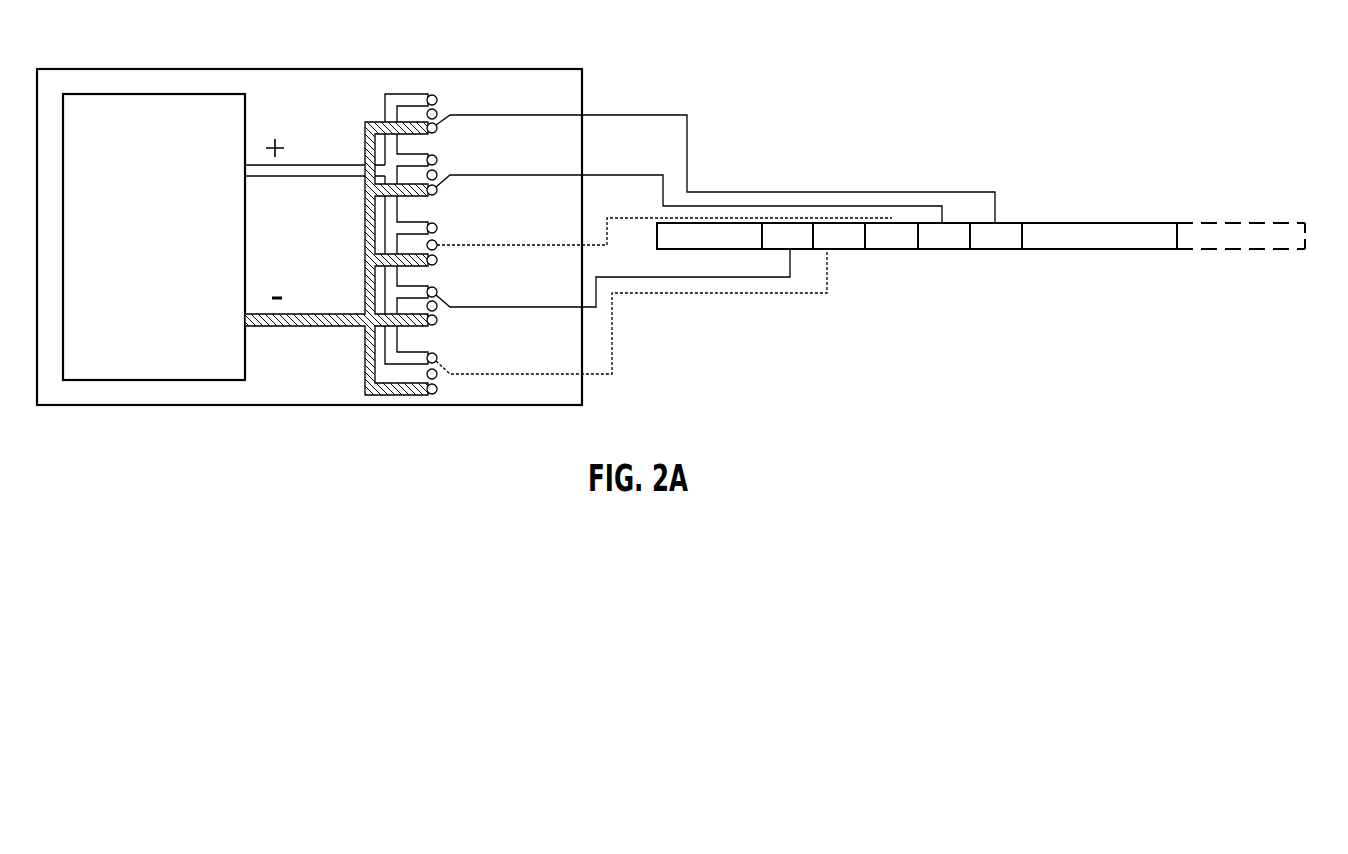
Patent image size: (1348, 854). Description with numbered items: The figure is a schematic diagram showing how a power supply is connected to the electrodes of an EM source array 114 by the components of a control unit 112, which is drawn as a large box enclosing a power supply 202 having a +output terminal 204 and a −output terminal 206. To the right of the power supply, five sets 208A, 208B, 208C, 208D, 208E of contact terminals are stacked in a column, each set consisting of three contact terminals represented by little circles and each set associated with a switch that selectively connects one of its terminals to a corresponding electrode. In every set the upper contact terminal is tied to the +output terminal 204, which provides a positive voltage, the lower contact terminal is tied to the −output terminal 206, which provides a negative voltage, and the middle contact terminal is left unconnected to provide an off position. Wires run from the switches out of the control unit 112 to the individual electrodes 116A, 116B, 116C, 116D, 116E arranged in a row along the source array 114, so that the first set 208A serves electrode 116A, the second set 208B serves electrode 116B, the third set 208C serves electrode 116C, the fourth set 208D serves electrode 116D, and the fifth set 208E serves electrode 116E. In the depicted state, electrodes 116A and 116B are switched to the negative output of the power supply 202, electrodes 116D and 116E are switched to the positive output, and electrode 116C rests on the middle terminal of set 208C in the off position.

The control unit 112 is at (462, 68).
The source array 114 is at (1278, 204).
The electrode 116A is at (997, 250).
The electrode 116B is at (945, 250).
The electrode 116C is at (887, 250).
The electrode 116D is at (847, 250).
The electrode 116E is at (798, 251).
The power supply 202 is at (153, 380).
The +output terminal 204 is at (307, 163).
The −output terminal 206 is at (305, 325).
The first set of contact terminals 208A is at (455, 100).
The second set of contact terminals 208B is at (457, 152).
The third set of contact terminals 208C is at (452, 222).
The fourth set of contact terminals 208D is at (452, 328).
The fifth set of contact terminals 208E is at (453, 390).